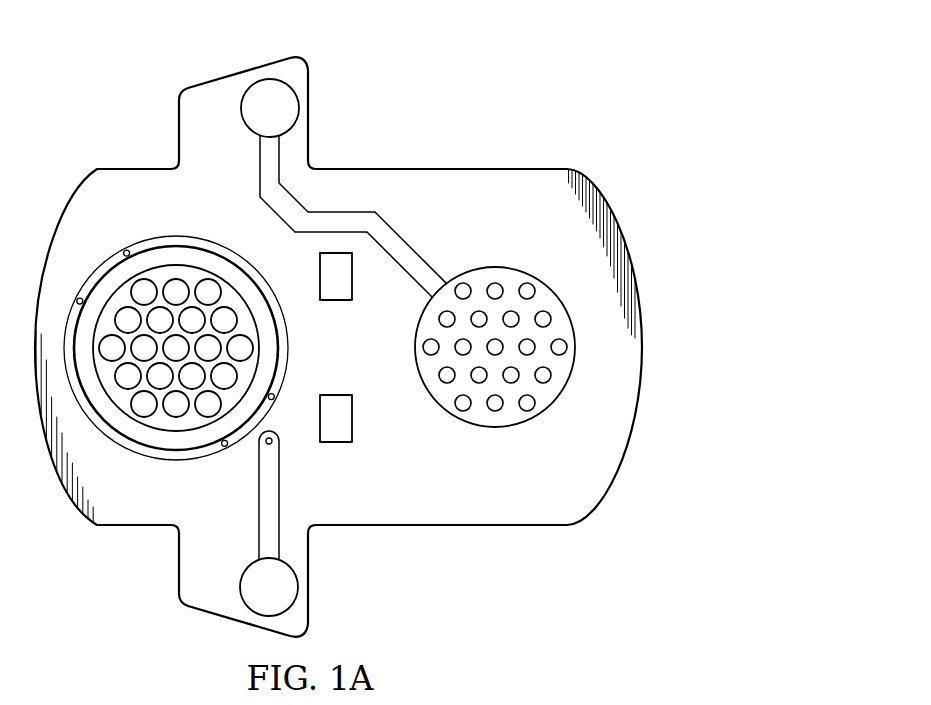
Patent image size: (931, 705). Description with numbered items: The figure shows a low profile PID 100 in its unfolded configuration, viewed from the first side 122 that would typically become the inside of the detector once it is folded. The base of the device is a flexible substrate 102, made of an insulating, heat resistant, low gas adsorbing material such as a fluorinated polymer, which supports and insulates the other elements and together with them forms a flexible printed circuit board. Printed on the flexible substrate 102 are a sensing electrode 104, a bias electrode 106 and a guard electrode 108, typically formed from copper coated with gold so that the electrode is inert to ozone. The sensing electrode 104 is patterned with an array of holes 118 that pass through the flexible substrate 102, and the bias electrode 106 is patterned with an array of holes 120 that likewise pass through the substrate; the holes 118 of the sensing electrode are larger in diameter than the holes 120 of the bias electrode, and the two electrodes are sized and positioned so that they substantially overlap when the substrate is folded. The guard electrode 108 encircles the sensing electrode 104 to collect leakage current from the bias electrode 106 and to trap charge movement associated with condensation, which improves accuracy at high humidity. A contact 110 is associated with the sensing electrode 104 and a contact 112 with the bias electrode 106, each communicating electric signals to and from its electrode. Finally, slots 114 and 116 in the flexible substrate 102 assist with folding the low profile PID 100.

The low profile PID 100 is at (91, 110).
The flexible substrate 102 is at (527, 154).
The sensing electrode 104 is at (205, 433).
The bias electrode 106 is at (497, 268).
The guard electrode 108 is at (147, 458).
The contact 110 is at (240, 583).
The contact 112 is at (267, 80).
The slot 114 is at (322, 424).
The slot 116 is at (322, 282).
The holes 118 is at (163, 303).
The holes 120 is at (489, 397).
The first side 122 is at (383, 182).